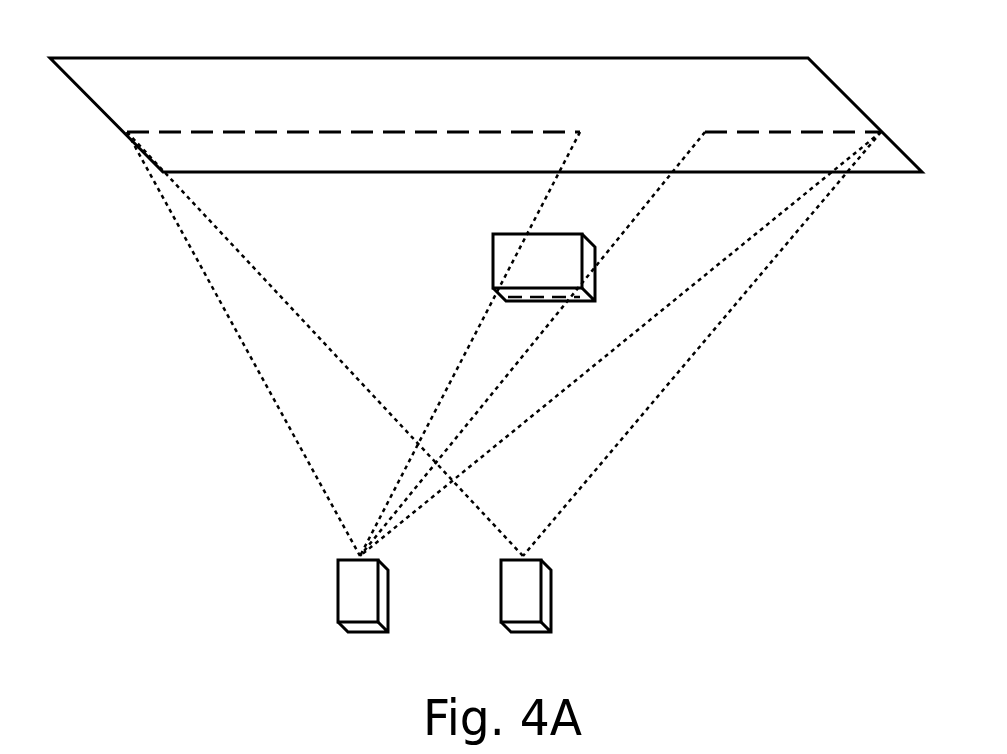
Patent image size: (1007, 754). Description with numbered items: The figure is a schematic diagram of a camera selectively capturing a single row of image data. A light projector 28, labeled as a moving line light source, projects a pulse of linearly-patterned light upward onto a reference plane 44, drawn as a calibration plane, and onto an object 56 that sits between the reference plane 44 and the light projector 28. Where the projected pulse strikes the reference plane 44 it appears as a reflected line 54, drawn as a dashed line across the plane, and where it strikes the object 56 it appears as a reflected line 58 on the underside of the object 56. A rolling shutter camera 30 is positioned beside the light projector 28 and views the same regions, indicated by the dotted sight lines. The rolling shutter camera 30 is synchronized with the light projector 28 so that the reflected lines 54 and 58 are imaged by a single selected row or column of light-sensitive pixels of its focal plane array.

The reference plane 44 is at (435, 57).
The reflected line 54 is at (733, 130).
The object 56 is at (586, 256).
The reflected line 58 is at (527, 298).
The light projector 28 is at (346, 595).
The rolling shutter camera 30 is at (548, 595).